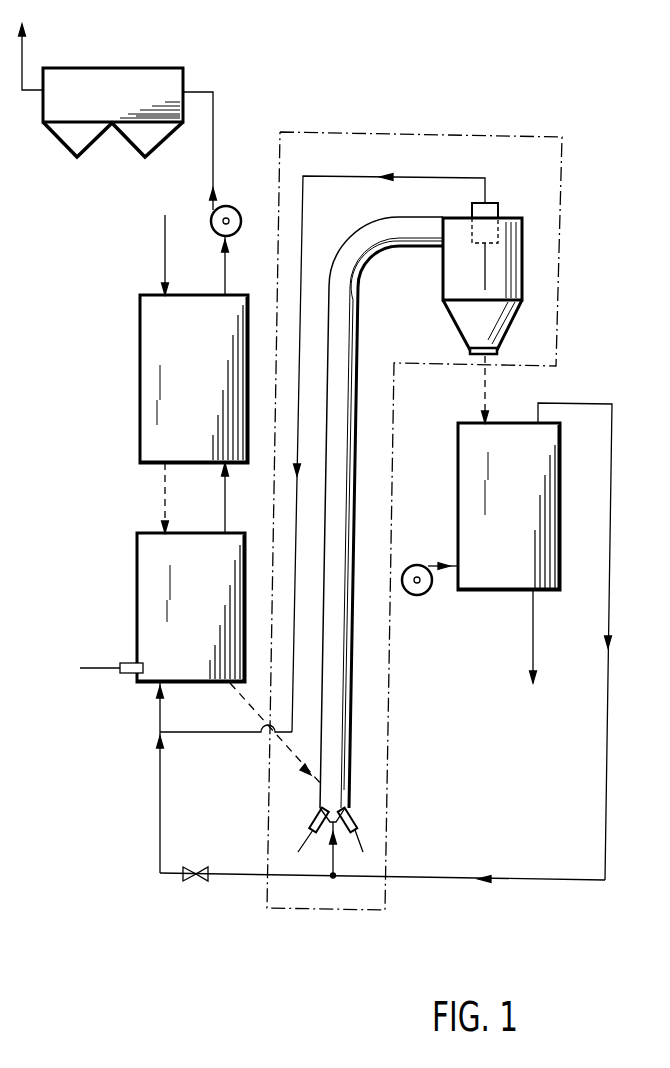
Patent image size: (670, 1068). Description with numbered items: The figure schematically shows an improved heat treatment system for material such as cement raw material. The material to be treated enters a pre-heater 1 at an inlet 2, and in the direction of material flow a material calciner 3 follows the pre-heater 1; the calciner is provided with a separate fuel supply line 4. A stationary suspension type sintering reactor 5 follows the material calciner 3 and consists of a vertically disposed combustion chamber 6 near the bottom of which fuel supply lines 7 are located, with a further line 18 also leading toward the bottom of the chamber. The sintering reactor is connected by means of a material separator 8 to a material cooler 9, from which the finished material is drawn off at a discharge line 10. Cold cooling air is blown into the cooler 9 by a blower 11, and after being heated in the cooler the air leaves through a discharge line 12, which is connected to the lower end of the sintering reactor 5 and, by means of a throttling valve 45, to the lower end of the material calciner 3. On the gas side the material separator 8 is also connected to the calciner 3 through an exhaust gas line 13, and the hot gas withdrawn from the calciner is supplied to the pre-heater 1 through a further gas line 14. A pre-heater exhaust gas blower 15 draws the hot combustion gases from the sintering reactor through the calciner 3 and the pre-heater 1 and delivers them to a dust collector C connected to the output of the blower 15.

The dust collector C is at (148, 75).
The pre-heater 1 is at (155, 363).
The inlet 2 is at (165, 233).
The material calciner 3 is at (155, 582).
The fuel supply line 4 is at (90, 668).
The suspension type sintering reactor 5 is at (533, 142).
The combustion chamber 6 is at (350, 308).
The fuel supply lines 7 is at (302, 845).
The material separator 8 is at (518, 262).
The material cooler 9 is at (517, 513).
The discharge line 10 is at (533, 630).
The blower 11 is at (430, 563).
The discharge line 12 is at (607, 752).
The exhaust gas line 13 is at (295, 500).
The gas line 14 is at (225, 497).
The pre-heater exhaust gas blower 15 is at (229, 207).
The feed line to burner 18 is at (290, 752).
The throttling valve 45 is at (195, 883).